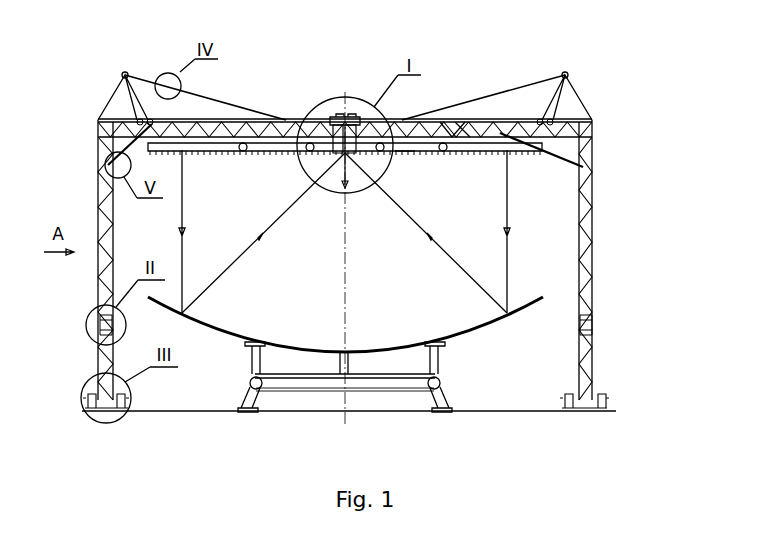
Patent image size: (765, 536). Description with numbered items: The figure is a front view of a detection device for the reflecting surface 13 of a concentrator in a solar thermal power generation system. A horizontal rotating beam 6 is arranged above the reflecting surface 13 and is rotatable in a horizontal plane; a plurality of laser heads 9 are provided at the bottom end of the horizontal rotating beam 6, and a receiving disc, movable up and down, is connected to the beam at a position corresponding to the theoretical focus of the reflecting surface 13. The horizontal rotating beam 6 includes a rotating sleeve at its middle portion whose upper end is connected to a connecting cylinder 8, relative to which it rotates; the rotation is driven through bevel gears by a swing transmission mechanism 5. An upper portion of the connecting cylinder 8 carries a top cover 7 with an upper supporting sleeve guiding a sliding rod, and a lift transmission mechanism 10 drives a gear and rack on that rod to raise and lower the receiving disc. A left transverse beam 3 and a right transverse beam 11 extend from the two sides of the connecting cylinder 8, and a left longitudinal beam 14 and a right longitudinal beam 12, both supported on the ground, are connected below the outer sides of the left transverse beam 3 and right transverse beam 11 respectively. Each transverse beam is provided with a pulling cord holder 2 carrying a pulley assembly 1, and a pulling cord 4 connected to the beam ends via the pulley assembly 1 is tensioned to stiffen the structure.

The pulley assembly 1 is at (126, 73).
The pulling cord holder 2 is at (138, 103).
The left transverse beam 3 is at (198, 120).
The pulling cord 4 is at (240, 107).
The swing transmission mechanism 5 is at (258, 120).
The horizontal rotating beam 6 is at (284, 158).
The top cover 7 is at (347, 116).
The connecting cylinder 8 is at (360, 125).
The laser heads 9 is at (400, 150).
The lift transmission mechanism 10 is at (450, 130).
The right transverse beam 11 is at (465, 133).
The right longitudinal beam 12 is at (580, 168).
The reflecting surface 13 is at (544, 295).
The left longitudinal beam 14 is at (98, 190).